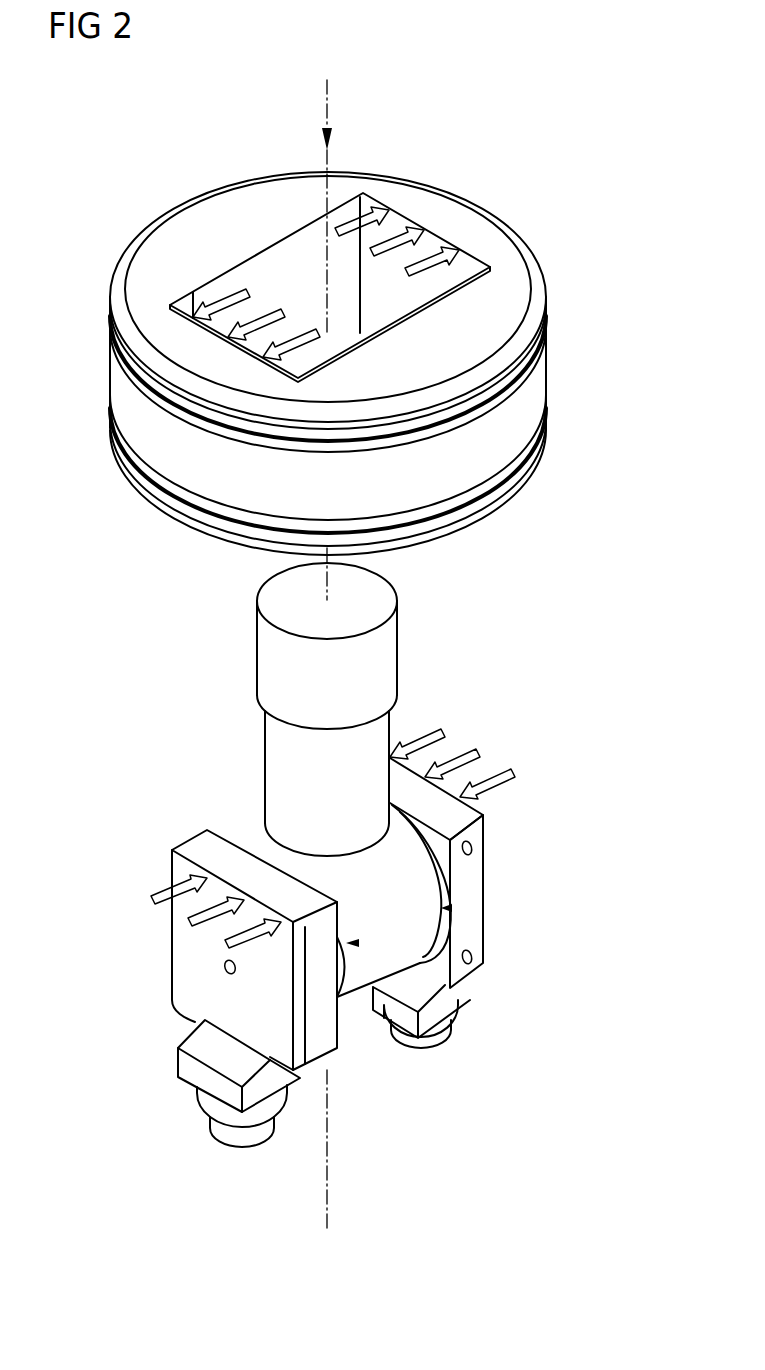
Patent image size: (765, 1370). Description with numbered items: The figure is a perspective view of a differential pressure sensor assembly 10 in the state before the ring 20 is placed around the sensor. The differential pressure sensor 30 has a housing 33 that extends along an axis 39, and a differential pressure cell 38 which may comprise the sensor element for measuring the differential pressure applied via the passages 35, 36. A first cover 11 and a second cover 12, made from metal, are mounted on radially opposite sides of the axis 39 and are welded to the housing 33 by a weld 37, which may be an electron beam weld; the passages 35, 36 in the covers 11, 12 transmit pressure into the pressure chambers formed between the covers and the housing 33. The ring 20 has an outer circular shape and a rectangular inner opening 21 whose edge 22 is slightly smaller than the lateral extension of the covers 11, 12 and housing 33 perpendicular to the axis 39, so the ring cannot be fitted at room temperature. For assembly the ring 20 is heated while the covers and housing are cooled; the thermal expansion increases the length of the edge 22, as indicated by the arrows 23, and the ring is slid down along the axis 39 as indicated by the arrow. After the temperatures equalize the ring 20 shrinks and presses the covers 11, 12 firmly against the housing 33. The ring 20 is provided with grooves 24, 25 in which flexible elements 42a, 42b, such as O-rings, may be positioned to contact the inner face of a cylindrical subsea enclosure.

The differential pressure sensor assembly 10 is at (185, 143).
The first cover 11 is at (198, 846).
The second cover 12 is at (485, 815).
The ring 20 is at (132, 240).
The inner opening 21 is at (287, 252).
The edge 22 is at (407, 316).
The direction arrows 23 is at (230, 337).
The groove 24 is at (112, 333).
The groove 25 is at (112, 425).
The differential pressure sensor 30 is at (431, 693).
The housing 33 is at (353, 997).
The passage 35 is at (245, 1150).
The passage 36 is at (423, 1048).
The weld 37 is at (358, 943).
The differential pressure cell 38 is at (263, 752).
The axis 39 is at (333, 111).
The flexible element 42a is at (548, 338).
The flexible element 42b is at (545, 465).